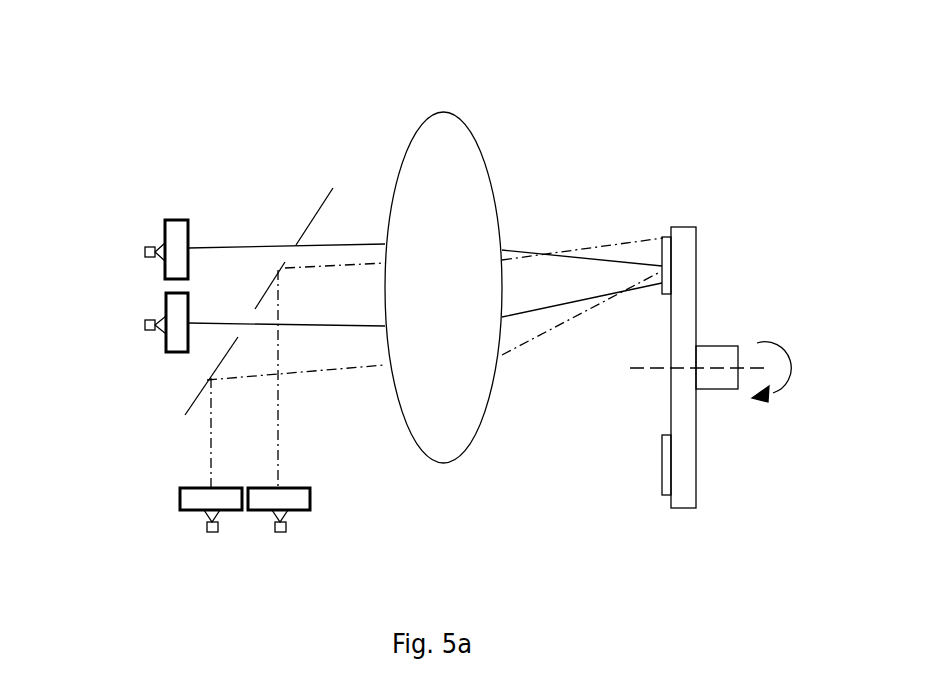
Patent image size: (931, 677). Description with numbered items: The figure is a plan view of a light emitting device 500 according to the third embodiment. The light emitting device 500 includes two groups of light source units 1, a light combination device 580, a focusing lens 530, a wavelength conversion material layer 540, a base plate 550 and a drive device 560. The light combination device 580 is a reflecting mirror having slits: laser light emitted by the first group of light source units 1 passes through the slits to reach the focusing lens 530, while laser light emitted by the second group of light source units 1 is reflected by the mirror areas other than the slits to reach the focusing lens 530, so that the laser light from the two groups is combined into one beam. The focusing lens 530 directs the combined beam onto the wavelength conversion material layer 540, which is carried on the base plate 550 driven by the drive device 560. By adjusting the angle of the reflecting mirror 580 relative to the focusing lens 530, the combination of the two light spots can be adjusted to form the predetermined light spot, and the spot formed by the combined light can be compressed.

The light emitting device 500 is at (285, 74).
The light source units 1 is at (150, 237).
The light combination device 580 is at (311, 216).
The focusing lens 530 is at (444, 139).
The wavelength conversion material layer 540 is at (665, 237).
The base plate 550 is at (685, 247).
The drive device 560 is at (721, 382).